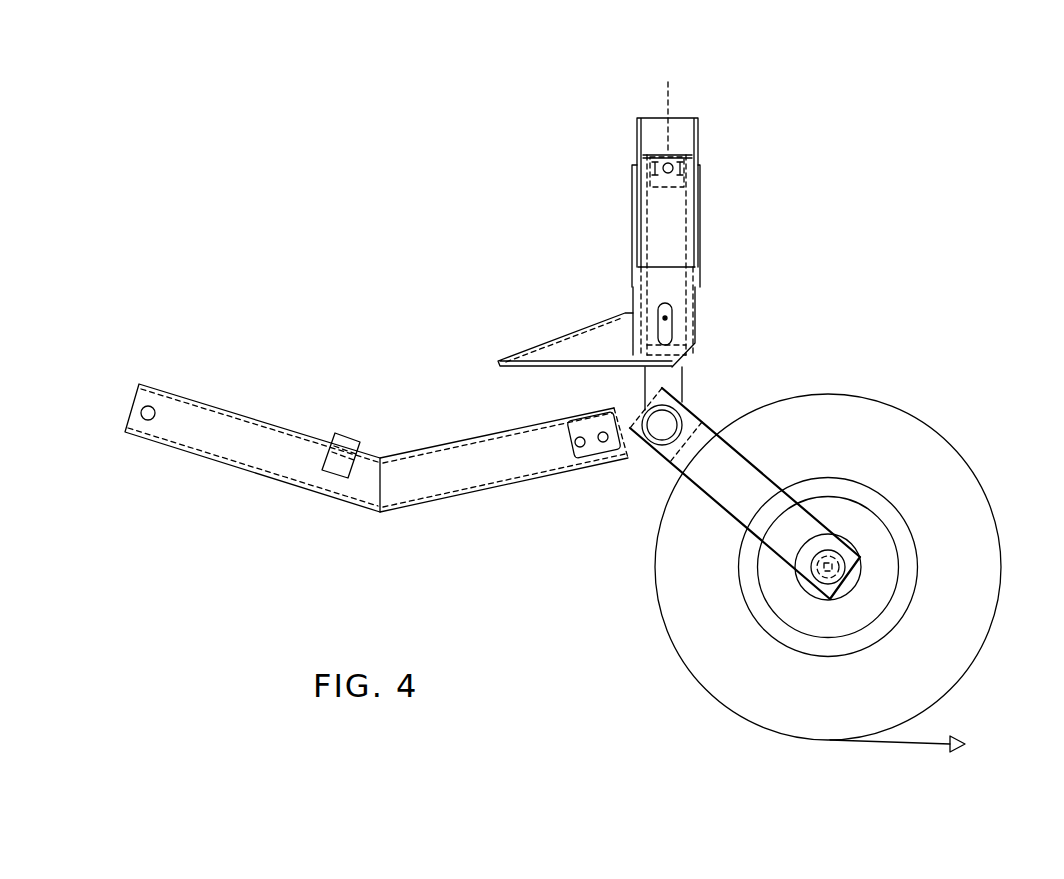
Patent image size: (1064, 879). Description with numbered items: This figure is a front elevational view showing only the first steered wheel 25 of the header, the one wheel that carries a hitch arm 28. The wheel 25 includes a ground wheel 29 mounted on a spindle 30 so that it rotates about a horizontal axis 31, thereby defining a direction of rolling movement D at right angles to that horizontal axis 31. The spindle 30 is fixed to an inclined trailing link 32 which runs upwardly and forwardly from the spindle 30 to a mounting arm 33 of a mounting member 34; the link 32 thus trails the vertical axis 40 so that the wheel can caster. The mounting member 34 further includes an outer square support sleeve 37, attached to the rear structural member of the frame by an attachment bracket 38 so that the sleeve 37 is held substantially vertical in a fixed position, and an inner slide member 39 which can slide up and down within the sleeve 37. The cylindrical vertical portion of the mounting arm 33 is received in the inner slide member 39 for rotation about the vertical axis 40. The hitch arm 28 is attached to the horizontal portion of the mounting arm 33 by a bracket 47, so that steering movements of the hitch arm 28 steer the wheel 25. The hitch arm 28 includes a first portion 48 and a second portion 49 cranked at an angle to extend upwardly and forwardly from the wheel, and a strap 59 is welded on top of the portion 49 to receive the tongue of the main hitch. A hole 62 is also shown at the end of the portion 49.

The first steered wheel 25 is at (815, 505).
The hitch arm 28 is at (385, 452).
The ground wheel 29 is at (853, 408).
The spindle 30 is at (840, 553).
The horizontal axis 31 is at (847, 563).
The trailing link 32 is at (750, 460).
The mounting arm 33 is at (695, 374).
The mounting member 34 is at (725, 213).
The outer square support sleeve 37 is at (699, 141).
The attachment bracket 38 is at (578, 330).
The inner slide member 39 is at (688, 212).
The vertical axis 40 is at (668, 93).
The bracket 47 is at (645, 450).
The first portion 48 is at (512, 482).
The second portion 49 is at (265, 443).
The strap 59 is at (352, 437).
The hole 62 is at (148, 406).
The direction of rolling movement D is at (890, 745).